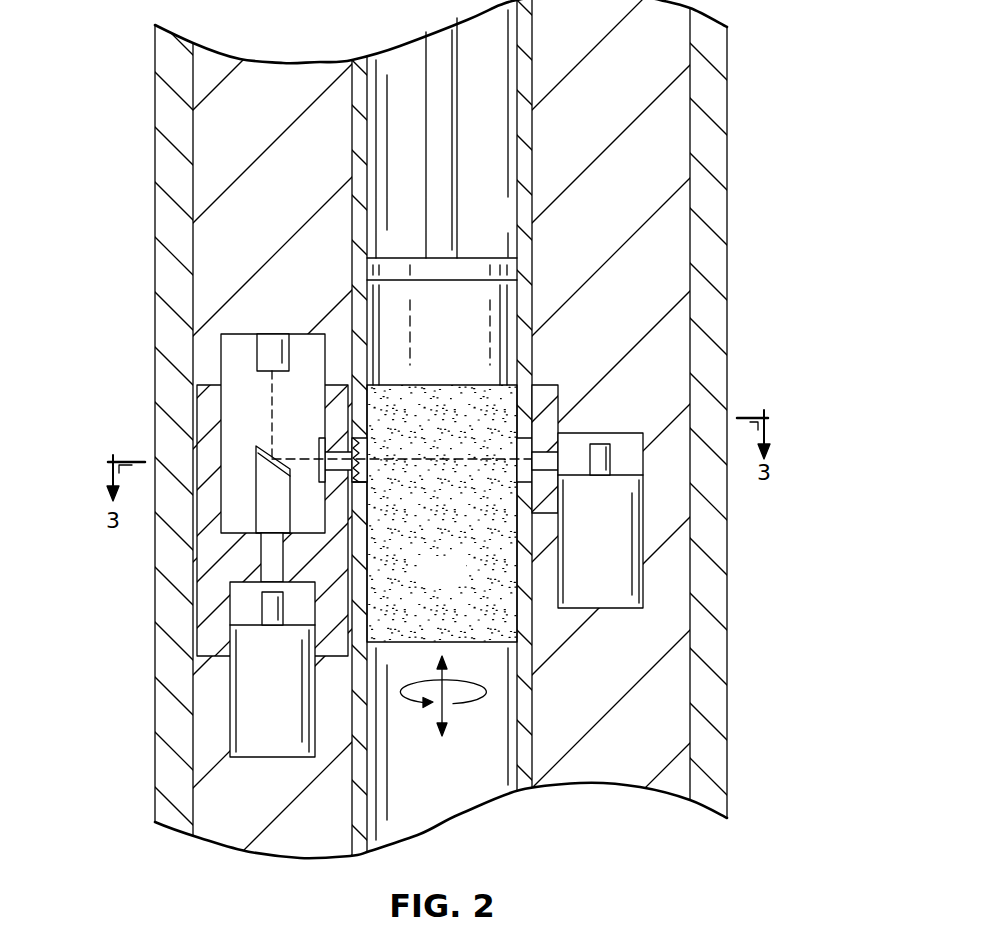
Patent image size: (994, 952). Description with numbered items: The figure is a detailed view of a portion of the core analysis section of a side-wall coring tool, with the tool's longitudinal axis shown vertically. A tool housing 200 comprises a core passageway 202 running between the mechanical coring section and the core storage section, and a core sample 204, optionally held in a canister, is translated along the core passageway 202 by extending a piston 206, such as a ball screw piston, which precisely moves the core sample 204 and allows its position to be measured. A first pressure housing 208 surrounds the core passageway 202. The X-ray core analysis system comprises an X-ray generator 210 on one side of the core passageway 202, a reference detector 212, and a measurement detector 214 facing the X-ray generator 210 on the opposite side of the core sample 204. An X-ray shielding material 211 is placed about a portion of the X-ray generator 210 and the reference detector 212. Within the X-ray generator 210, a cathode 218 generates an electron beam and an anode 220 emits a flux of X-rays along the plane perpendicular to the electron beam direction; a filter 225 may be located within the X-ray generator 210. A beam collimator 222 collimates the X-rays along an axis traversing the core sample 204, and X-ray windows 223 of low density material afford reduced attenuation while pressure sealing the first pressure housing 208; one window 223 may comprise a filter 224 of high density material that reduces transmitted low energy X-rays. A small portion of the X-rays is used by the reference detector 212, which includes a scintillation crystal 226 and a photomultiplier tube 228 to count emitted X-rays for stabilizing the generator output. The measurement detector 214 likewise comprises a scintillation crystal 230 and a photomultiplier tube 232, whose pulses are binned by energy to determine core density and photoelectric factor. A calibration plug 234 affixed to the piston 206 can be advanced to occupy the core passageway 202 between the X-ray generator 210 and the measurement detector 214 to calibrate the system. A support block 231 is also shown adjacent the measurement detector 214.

The tool housing 200 is at (727, 97).
The core passageway 202 is at (421, 782).
The core sample 204 is at (421, 585).
The piston 206 is at (480, 258).
The first pressure housing 208 is at (356, 149).
The X-ray generator 210 is at (180, 442).
The X-ray shielding material 211 is at (200, 597).
The reference detector 212 is at (250, 766).
The measurement detector 214 is at (709, 478).
The cathode 218 is at (255, 353).
The anode 220 is at (257, 500).
The beam collimator 222 is at (343, 452).
The X-ray window 223 is at (516, 448).
The filter 224 is at (367, 470).
The filter 225 is at (321, 445).
The scintillation crystal 226 is at (263, 607).
The photomultiplier tube 228 is at (251, 728).
The scintillation crystal 230 is at (611, 462).
The support block 231 is at (545, 392).
The photomultiplier tube 232 is at (577, 580).
The calibration plug 234 is at (421, 348).